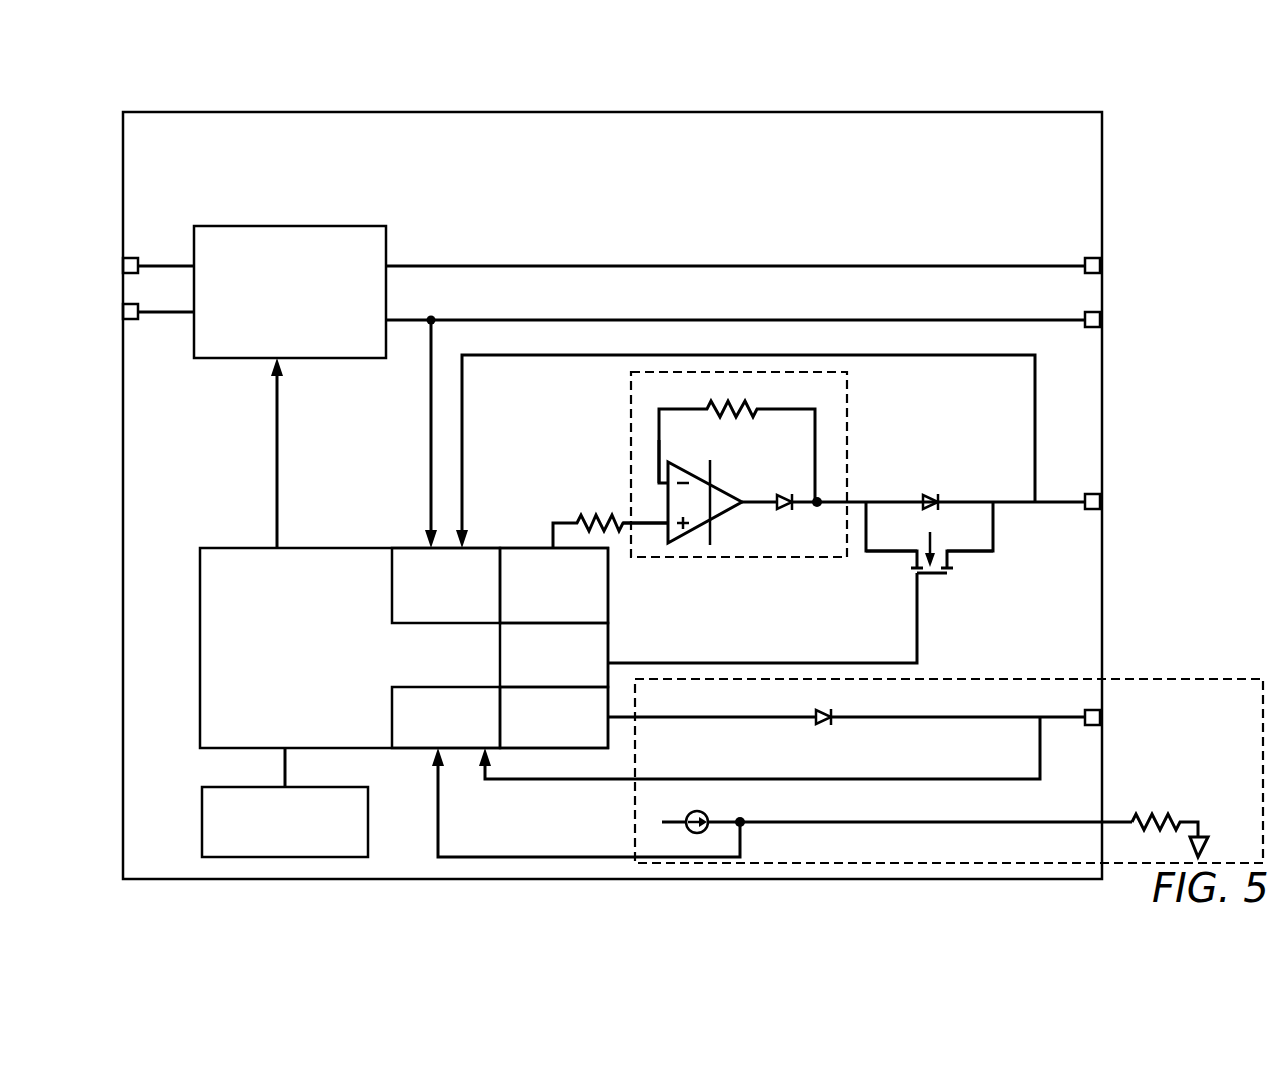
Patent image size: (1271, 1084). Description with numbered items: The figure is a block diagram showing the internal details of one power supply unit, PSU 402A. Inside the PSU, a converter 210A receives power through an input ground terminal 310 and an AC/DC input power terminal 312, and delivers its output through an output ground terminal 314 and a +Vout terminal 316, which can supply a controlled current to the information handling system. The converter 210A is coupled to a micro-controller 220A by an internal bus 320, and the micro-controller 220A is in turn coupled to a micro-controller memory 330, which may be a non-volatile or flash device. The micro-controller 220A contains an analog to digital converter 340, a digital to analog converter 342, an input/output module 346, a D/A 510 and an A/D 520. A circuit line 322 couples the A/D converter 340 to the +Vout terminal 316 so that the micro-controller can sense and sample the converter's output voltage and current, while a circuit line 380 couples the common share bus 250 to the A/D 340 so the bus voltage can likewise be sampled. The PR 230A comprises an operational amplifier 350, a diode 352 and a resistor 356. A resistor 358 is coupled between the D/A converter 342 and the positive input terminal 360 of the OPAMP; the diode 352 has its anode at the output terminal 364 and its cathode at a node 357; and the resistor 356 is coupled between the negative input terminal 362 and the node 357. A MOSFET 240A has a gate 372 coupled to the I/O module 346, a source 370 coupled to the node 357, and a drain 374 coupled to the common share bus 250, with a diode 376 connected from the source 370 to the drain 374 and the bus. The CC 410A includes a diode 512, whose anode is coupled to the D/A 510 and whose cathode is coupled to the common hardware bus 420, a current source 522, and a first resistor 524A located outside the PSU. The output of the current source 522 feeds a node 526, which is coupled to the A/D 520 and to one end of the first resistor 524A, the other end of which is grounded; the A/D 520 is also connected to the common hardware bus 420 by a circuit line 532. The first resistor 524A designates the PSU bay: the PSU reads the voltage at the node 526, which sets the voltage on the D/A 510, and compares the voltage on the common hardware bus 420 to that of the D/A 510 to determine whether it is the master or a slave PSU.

The power supply unit 402A is at (652, 170).
The converter 210A is at (265, 292).
The input ground terminal 310 is at (110, 275).
The AC/DC input power terminal 312 is at (110, 320).
The output ground terminal 314 is at (1197, 275).
The +Vout terminal 316 is at (1192, 329).
The common share bus 250 is at (1198, 511).
The common hardware bus 420 is at (1210, 726).
The internal bus 320 is at (225, 453).
The circuit line 322 is at (378, 434).
The circuit line 380 is at (818, 451).
The micro-controller 220A is at (304, 691).
The analog to digital converter 340 is at (428, 609).
The digital to analog converter 342 is at (536, 609).
The input/output module 346 is at (536, 677).
The analog to digital converter 520 is at (428, 739).
The digital to analog converter 510 is at (536, 739).
The micro-controller memory 330 is at (331, 836).
The PR 230A is at (796, 464).
The operational amplifier 350 is at (724, 557).
The resistor 356 is at (737, 415).
The negative input terminal 362 is at (609, 449).
The resistor 358 is at (585, 495).
The positive input terminal 360 is at (647, 527).
The output terminal 364 is at (767, 470).
The diode 352 is at (769, 540).
The node 357 is at (856, 486).
The diode 376 is at (966, 469).
The MOSFET 240A is at (956, 565).
The source 370 is at (863, 572).
The drain 374 is at (994, 570).
The gate 372 is at (762, 618).
The CC 410A is at (949, 757).
The diode 512 is at (767, 704).
The circuit line 532 is at (825, 748).
The current source 522 is at (897, 808).
The node 526 is at (629, 827).
The first resistor 524A is at (1192, 819).